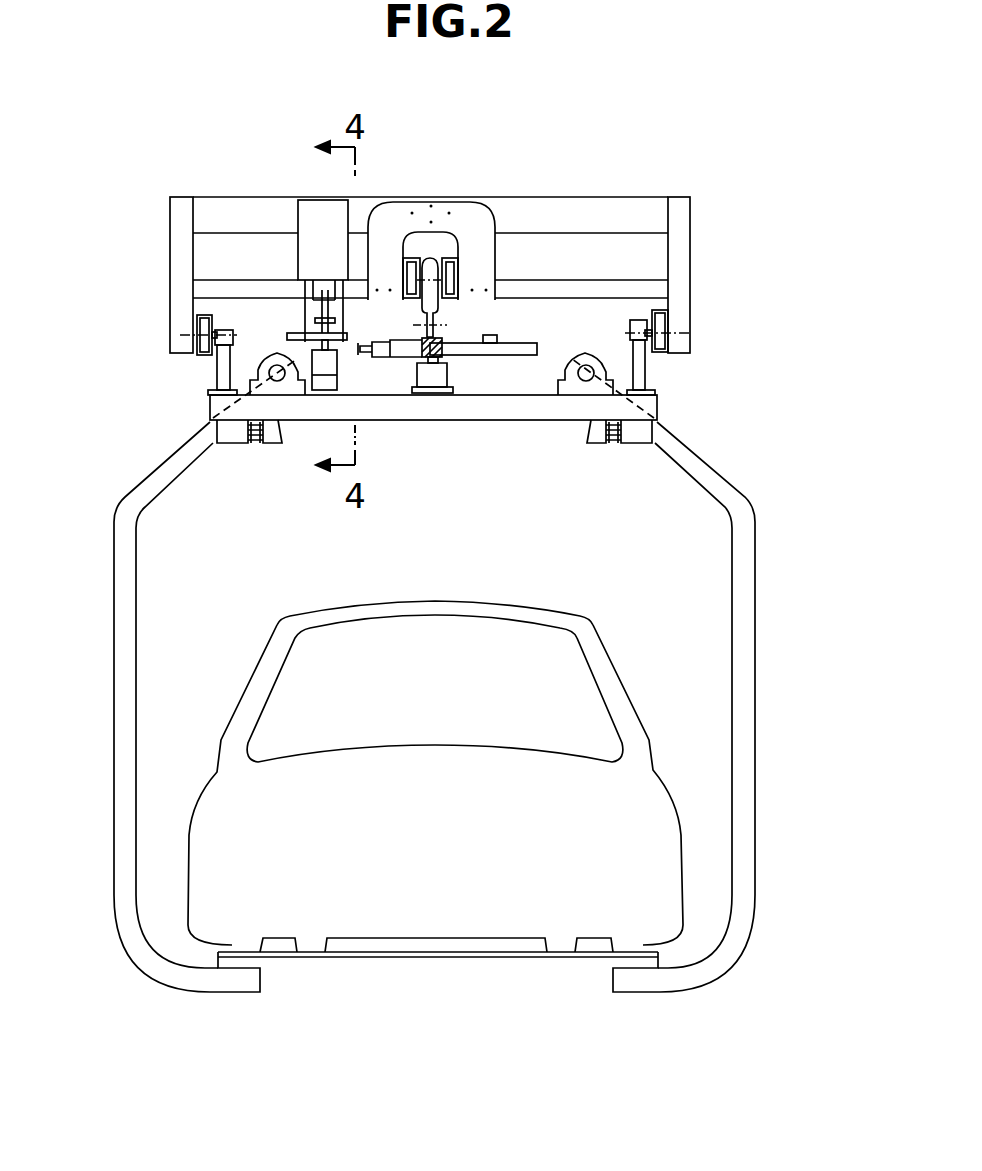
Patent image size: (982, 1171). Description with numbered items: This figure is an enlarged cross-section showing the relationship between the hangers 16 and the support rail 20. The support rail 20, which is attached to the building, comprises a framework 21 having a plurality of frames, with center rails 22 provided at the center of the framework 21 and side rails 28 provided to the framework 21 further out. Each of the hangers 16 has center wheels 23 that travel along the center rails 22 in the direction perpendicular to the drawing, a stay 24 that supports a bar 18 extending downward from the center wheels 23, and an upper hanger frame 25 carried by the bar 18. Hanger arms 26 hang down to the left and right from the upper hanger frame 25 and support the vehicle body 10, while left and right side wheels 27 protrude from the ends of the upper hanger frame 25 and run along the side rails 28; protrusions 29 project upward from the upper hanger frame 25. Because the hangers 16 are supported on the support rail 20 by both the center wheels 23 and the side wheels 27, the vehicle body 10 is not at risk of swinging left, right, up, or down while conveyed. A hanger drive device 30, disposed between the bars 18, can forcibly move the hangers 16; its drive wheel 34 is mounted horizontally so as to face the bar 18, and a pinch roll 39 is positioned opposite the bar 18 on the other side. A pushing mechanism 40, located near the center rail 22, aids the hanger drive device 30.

The vehicle body 10 is at (576, 618).
The hangers 16 is at (451, 707).
The bar 18 is at (450, 362).
The support rail 20 is at (457, 298).
The framework 21 is at (540, 200).
The center rails 22 is at (411, 258).
The center wheels 23 is at (431, 258).
The stay 24 is at (445, 306).
The upper hanger frame 25 is at (655, 407).
The hanger arms 26 is at (114, 713).
The side wheels 27 is at (197, 333).
The side rails 28 is at (207, 360).
The protrusions 29 is at (323, 394).
The hanger drive device 30 is at (488, 392).
The drive wheel 34 is at (520, 357).
The pinch roll 39 is at (405, 358).
The pushing mechanism 40 is at (273, 248).